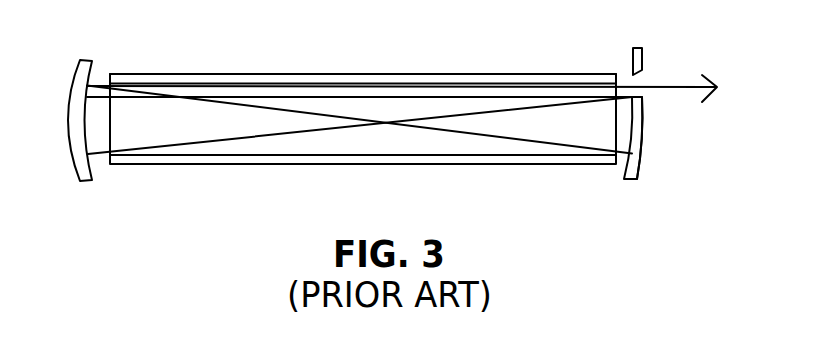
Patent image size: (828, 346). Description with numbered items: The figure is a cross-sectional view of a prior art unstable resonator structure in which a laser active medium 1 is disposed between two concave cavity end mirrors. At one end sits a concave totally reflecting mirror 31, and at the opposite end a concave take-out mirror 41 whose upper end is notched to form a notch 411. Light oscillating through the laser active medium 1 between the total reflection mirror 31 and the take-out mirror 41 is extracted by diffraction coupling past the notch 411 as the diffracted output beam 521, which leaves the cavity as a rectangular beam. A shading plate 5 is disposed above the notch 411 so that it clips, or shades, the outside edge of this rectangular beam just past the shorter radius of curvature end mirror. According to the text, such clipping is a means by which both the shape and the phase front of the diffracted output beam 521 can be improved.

The laser active medium 1 is at (363, 165).
The diffracted output beam 521 is at (455, 74).
The concave totally reflecting mirror 31 is at (85, 60).
The concave take-out mirror 41 is at (641, 162).
The notch 411 is at (643, 99).
The shading plate 5 is at (642, 62).